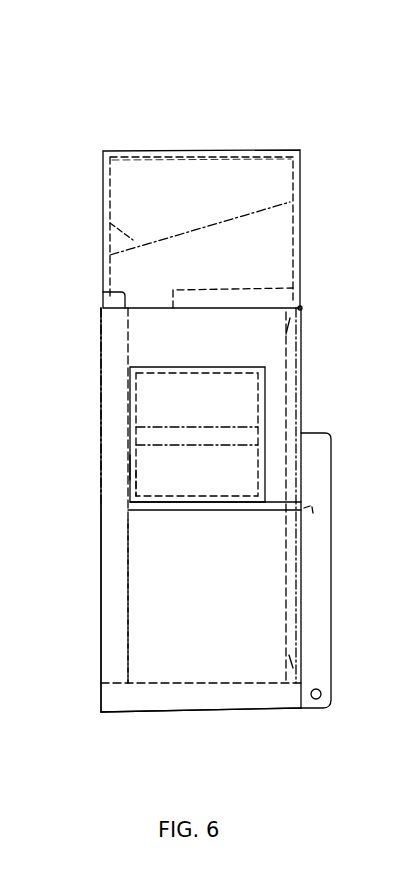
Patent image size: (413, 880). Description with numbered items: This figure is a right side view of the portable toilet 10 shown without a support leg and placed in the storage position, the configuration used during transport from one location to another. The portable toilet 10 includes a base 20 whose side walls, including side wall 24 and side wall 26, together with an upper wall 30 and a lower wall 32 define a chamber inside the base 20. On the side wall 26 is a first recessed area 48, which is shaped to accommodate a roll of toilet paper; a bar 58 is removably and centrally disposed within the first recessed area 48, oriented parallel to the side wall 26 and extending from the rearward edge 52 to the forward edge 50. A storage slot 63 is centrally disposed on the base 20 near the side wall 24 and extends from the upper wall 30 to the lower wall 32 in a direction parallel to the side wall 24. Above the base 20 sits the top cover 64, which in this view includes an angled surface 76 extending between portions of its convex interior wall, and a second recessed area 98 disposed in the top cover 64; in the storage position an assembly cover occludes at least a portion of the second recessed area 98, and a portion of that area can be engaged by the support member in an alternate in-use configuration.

The portable toilet 10 is at (193, 108).
The base 20 is at (94, 711).
The side wall 24 is at (100, 417).
The side wall 26 is at (138, 590).
The upper wall 30 is at (148, 308).
The lower wall 32 is at (212, 712).
The first recessed area 48 is at (147, 482).
The forward edge 50 is at (267, 390).
The rearward edge 52 is at (130, 468).
The bar 58 is at (247, 434).
The storage slot 63 is at (117, 372).
The top cover 64 is at (96, 182).
The angled surface 76 is at (268, 209).
The second recessed area 98 is at (270, 165).